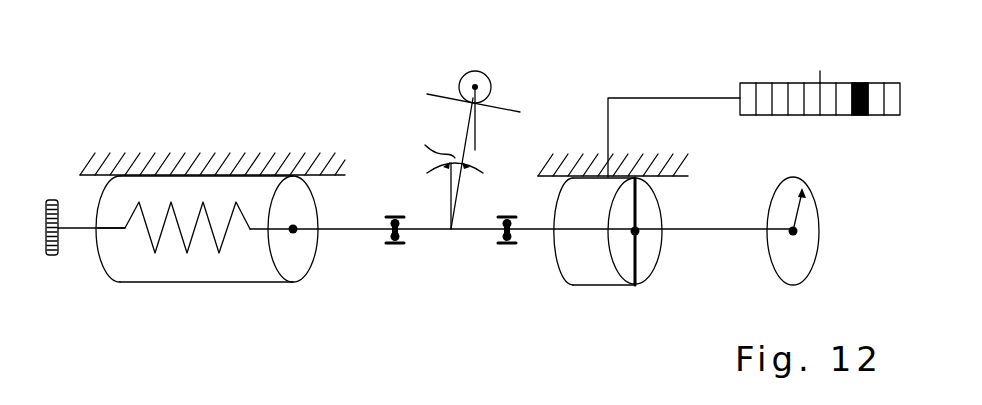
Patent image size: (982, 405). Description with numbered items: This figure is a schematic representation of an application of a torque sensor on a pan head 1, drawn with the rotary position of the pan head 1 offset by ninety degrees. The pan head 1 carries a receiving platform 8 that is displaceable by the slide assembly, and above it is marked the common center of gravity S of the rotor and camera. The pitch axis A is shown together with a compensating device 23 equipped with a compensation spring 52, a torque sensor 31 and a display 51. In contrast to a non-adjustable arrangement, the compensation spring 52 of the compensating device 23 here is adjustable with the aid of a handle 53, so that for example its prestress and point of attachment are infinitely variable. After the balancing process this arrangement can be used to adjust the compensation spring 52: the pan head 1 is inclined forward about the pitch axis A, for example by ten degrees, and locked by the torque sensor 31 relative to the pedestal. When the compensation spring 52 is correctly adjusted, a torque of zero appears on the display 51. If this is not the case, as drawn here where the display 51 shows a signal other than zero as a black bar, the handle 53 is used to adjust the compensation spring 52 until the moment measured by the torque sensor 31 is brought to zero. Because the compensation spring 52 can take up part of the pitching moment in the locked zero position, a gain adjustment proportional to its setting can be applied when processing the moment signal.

The pan head 1 is at (193, 55).
The handle 53 is at (55, 200).
The compensating device 23 is at (143, 282).
The compensation spring 52 is at (225, 242).
The receiving platform 8 is at (430, 93).
The center of gravity S is at (478, 83).
The pitch axis A is at (437, 233).
The display 51 is at (748, 82).
The torque sensor 31 is at (585, 285).